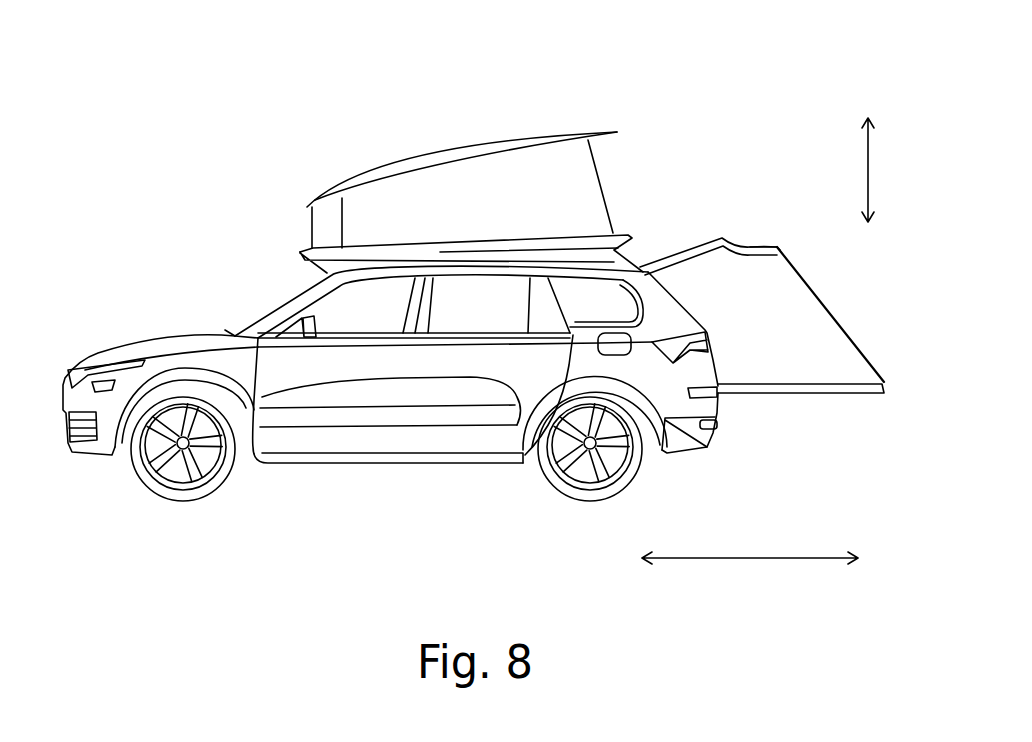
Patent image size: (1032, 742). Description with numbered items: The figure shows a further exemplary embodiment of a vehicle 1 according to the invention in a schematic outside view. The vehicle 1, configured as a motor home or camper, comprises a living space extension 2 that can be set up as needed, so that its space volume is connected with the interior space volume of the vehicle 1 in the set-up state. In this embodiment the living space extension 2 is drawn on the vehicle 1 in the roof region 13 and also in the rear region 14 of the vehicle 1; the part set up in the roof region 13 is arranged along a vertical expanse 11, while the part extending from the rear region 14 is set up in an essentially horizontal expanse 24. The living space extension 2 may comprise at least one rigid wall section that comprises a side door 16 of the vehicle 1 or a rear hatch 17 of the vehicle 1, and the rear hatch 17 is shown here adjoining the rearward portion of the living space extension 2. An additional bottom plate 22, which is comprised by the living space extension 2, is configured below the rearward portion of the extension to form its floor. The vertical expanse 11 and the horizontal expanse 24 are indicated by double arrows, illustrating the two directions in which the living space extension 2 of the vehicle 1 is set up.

The vehicle 1 is at (527, 114).
The living space extension 2 is at (560, 280).
The vertical expanse 11 is at (860, 160).
The roof region 13 is at (297, 213).
The rear region 14 is at (647, 249).
The side door 16 is at (353, 398).
The rear hatch 17 is at (770, 246).
The additional bottom plate 22 is at (838, 392).
The horizontal expanse 24 is at (727, 560).